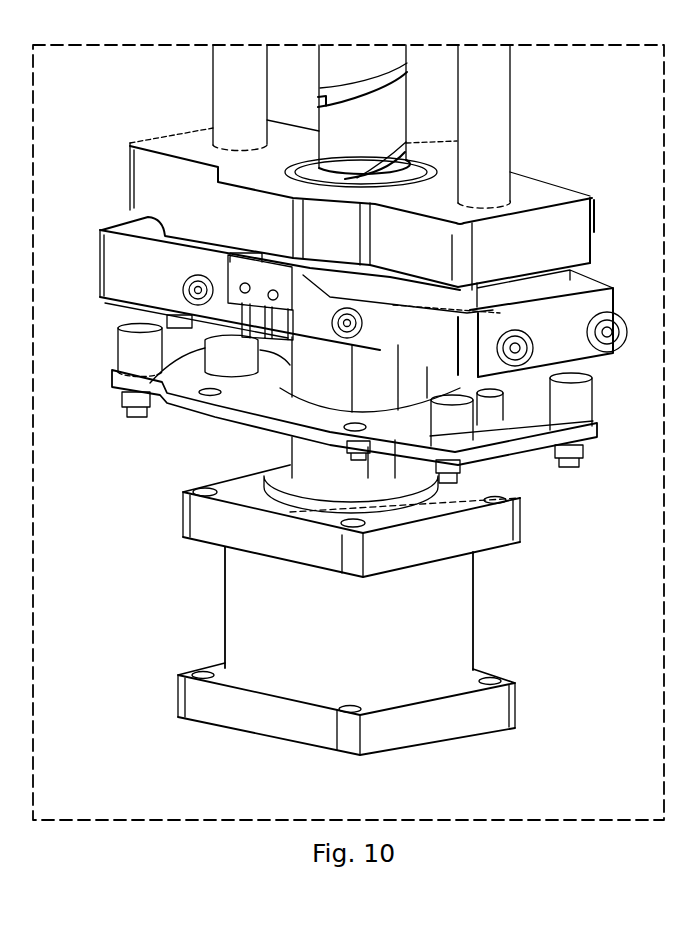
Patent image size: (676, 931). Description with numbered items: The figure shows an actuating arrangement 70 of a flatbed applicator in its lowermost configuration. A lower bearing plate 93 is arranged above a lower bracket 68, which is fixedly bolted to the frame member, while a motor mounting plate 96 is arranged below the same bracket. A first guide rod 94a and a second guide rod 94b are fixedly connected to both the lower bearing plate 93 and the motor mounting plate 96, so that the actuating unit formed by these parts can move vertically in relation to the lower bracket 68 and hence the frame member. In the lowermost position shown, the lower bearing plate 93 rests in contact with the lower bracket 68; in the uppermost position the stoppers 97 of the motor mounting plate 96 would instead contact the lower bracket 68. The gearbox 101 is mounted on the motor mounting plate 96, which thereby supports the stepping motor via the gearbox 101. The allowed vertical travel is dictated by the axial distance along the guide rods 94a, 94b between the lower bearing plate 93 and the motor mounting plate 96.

The actuating arrangement 70 is at (78, 347).
The first guide rod 94a is at (225, 77).
The second guide rod 94b is at (498, 100).
The lower bearing plate 93 is at (570, 225).
The lower bracket 68 is at (553, 352).
The stoppers 97 is at (137, 355).
The motor mounting plate 96 is at (502, 448).
The gearbox 101 is at (455, 610).